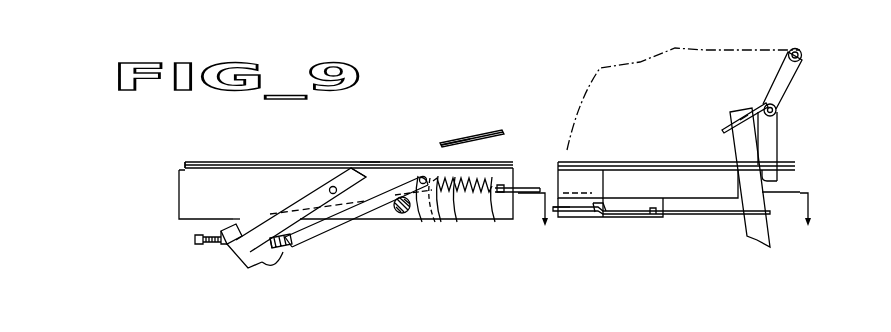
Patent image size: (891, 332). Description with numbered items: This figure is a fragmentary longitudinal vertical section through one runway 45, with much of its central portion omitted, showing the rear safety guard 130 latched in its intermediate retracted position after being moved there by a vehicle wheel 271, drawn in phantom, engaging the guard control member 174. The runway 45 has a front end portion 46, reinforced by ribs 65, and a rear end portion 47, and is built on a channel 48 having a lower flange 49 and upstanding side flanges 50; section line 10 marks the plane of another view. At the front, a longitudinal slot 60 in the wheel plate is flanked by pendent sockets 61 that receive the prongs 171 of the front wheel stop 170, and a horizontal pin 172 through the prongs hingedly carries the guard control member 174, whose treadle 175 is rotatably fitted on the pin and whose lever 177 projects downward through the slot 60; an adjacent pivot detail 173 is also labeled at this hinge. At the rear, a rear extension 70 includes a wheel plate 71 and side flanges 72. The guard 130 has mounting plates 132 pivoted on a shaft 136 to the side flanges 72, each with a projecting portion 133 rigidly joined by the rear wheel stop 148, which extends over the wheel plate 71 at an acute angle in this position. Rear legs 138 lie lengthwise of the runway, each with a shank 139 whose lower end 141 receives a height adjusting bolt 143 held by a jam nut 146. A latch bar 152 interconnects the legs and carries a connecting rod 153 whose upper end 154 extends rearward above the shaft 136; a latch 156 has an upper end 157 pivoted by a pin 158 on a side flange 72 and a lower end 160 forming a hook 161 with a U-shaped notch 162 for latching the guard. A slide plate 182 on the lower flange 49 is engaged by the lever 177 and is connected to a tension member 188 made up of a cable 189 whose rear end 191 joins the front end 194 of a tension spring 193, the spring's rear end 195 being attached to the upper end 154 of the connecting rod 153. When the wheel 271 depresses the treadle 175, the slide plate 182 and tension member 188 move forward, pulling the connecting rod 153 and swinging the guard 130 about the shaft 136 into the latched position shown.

The section line 10- 10 is at (669, 223).
The runway 45 is at (220, 156).
The front end portion 46 is at (697, 168).
The rear end portion 47 is at (187, 160).
The channel 48 is at (590, 172).
The lower flange 49 is at (597, 214).
The side flanges 50 is at (578, 170).
The longitudinal slot 60 is at (728, 173).
The pendent sockets 61 is at (778, 174).
The ribs 65 is at (634, 180).
The rear extension 70 is at (368, 160).
The wheel plate 71 is at (270, 162).
The side flanges 72 is at (180, 193).
The rear safety guard 130 is at (445, 135).
The mounting plates 132 is at (440, 158).
The projecting portion 133 is at (474, 155).
The shaft 136 is at (345, 222).
The rear legs 138 is at (238, 215).
The shank 139 is at (350, 228).
The lower end 141 is at (228, 247).
The height adjusting bolt 143 is at (196, 236).
The jam nut 146 is at (222, 246).
The rear wheel stop 148 is at (492, 131).
The latch bar 152 is at (285, 248).
The connecting rod 153 is at (303, 230).
The upper end 154 is at (406, 212).
The latch 156 is at (313, 203).
The upper end 157 is at (352, 166).
The pin 158 is at (328, 190).
The lower end 160 is at (255, 254).
The hook 161 is at (283, 268).
The U-shaped notch 162 is at (283, 245).
The front wheel stop 170 is at (802, 51).
The prongs 171 is at (772, 141).
The horizontal pin 172 is at (781, 103).
The pivot 173 is at (778, 116).
The guard control member 174 is at (737, 110).
The treadle 175 is at (733, 125).
The lever 177 is at (760, 238).
The slide plate 182 is at (680, 214).
The tension member 188 is at (506, 184).
The cable 189 is at (524, 196).
The rear end 191 is at (523, 190).
The tension spring 193 is at (456, 190).
The front end 194 is at (492, 195).
The rear end 195 is at (437, 210).
The wheels 271 is at (598, 70).